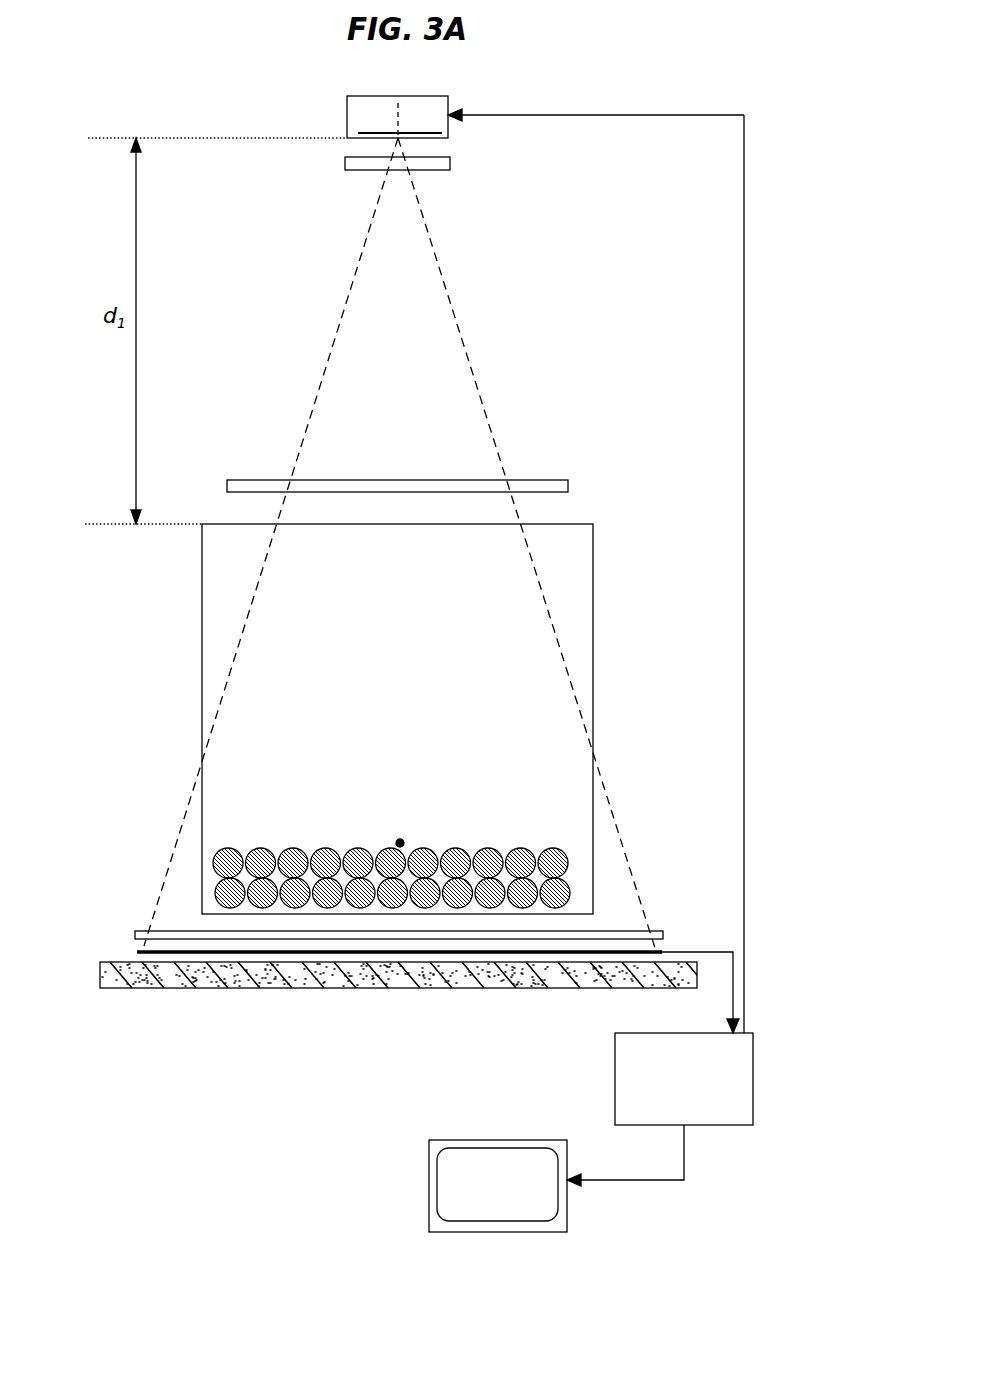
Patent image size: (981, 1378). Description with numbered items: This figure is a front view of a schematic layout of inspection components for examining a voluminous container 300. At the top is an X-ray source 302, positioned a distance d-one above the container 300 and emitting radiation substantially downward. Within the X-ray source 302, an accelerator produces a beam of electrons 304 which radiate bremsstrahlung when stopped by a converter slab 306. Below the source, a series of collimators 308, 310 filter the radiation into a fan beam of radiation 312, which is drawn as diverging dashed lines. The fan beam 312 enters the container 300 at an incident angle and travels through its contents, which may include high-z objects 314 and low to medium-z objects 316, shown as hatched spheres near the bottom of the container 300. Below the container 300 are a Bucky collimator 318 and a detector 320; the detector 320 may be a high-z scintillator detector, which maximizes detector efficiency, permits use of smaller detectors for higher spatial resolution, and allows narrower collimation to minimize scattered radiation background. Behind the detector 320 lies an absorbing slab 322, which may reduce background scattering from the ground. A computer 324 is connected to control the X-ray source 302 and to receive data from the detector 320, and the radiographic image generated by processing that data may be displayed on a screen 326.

The voluminous container 300 is at (202, 607).
The X-ray source 302 is at (363, 97).
The beam of electrons 304 is at (400, 117).
The converter slab 306 is at (375, 133).
The collimator 308 is at (453, 162).
The collimator 310 is at (542, 480).
The fan beam of radiation 312 is at (460, 332).
The high-z objects 314 is at (402, 842).
The low to medium-z objects 316 is at (225, 850).
The Bucky collimator 318 is at (612, 934).
The detector 320 is at (137, 952).
The absorbing slab 322 is at (212, 988).
The computer 324 is at (730, 1057).
The screen 326 is at (470, 1143).